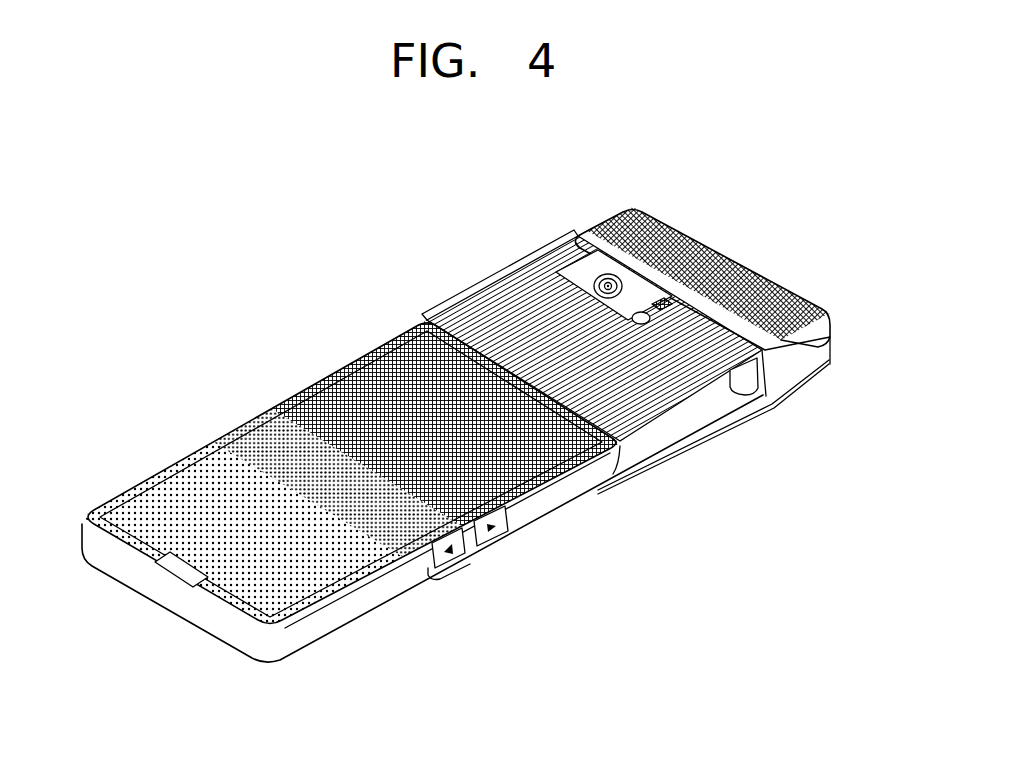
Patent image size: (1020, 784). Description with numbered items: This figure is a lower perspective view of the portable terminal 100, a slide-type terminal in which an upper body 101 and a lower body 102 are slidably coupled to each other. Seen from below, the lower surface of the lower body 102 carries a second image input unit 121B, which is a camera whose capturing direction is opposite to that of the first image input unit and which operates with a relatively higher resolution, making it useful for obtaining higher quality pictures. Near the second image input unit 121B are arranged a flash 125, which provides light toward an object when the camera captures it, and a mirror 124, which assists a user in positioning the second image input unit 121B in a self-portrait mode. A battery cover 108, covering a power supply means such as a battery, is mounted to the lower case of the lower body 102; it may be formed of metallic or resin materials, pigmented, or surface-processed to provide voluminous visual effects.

The portable terminal 100 is at (248, 256).
The upper body 101 is at (586, 221).
The lower body 102 is at (122, 469).
The battery cover 108 is at (290, 408).
The second image input unit 121B is at (613, 276).
The mirror 124 is at (652, 302).
The flash 125 is at (703, 291).